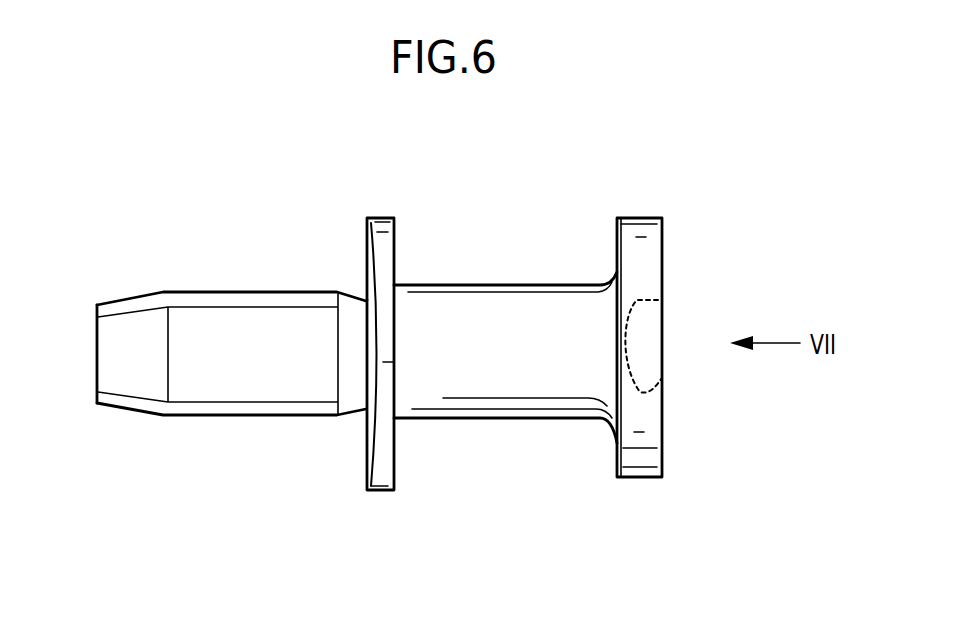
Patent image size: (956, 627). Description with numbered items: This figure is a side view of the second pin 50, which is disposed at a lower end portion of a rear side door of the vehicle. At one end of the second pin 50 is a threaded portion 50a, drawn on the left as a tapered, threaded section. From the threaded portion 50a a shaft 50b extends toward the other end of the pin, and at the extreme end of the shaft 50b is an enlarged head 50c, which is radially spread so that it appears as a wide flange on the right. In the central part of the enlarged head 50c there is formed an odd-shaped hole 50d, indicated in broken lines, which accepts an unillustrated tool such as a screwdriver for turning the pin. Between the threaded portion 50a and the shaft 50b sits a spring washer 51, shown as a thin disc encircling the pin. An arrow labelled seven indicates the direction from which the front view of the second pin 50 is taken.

The second pin 50 is at (292, 463).
The threaded portion 50a is at (210, 298).
The shaft 50b is at (488, 320).
The enlarged head 50c is at (638, 218).
The odd-shaped hole 50d is at (662, 378).
The spring washer 51 is at (382, 470).